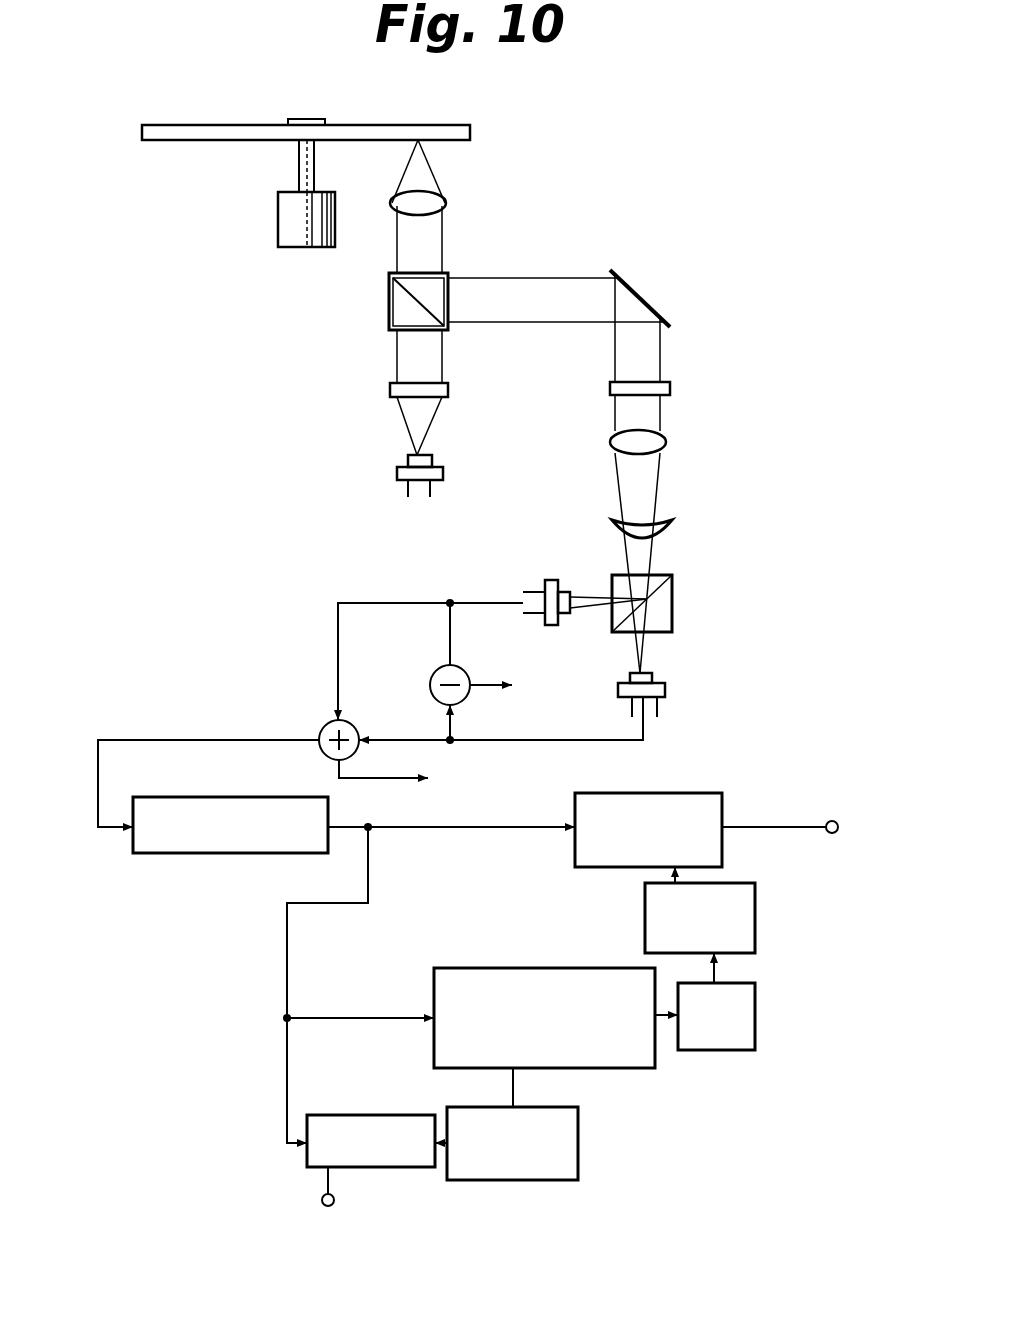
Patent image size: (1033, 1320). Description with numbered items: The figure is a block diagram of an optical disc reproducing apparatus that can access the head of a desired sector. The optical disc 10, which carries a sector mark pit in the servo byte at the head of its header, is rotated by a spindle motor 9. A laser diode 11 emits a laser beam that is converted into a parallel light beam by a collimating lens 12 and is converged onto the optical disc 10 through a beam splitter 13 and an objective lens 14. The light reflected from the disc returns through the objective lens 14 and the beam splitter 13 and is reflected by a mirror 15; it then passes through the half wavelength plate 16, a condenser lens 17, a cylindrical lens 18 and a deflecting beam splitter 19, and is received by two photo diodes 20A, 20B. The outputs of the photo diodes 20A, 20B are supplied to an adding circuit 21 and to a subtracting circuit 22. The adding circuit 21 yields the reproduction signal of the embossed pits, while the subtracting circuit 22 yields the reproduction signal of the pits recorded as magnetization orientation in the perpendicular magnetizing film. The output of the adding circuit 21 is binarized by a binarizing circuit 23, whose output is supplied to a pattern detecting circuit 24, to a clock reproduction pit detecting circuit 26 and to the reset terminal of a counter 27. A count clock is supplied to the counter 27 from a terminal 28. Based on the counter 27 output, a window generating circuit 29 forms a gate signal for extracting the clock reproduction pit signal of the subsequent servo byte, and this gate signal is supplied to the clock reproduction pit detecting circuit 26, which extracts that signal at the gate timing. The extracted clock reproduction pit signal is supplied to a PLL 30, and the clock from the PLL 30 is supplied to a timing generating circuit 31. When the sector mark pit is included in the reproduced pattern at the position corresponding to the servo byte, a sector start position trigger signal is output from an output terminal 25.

The spindle motor 9 is at (278, 223).
The optical disc 10 is at (362, 125).
The laser diode 11 is at (443, 472).
The collimating lens 12 is at (448, 390).
The beam splitter 13 is at (390, 307).
The objective lens 14 is at (448, 203).
The mirror 15 is at (645, 297).
The half wavelength plate 16 is at (670, 388).
The condenser lens 17 is at (667, 442).
The cylindrical lens 18 is at (672, 522).
The deflecting beam splitter 19 is at (672, 606).
The photo diode 20A is at (549, 580).
The photo diode 20B is at (665, 690).
The adding circuit 21 is at (353, 722).
The subtracting circuit 22 is at (437, 671).
The binarizing circuit 23 is at (226, 797).
The pattern detecting circuit 24 is at (683, 793).
The output terminal 25 is at (832, 821).
The clock reproduction pit detecting circuit 26 is at (525, 968).
The counter 27 is at (364, 1115).
The terminal 28 is at (322, 1200).
The window generating circuit 29 is at (580, 1142).
The PLL 30 is at (755, 1008).
The timing generating circuit 31 is at (752, 883).